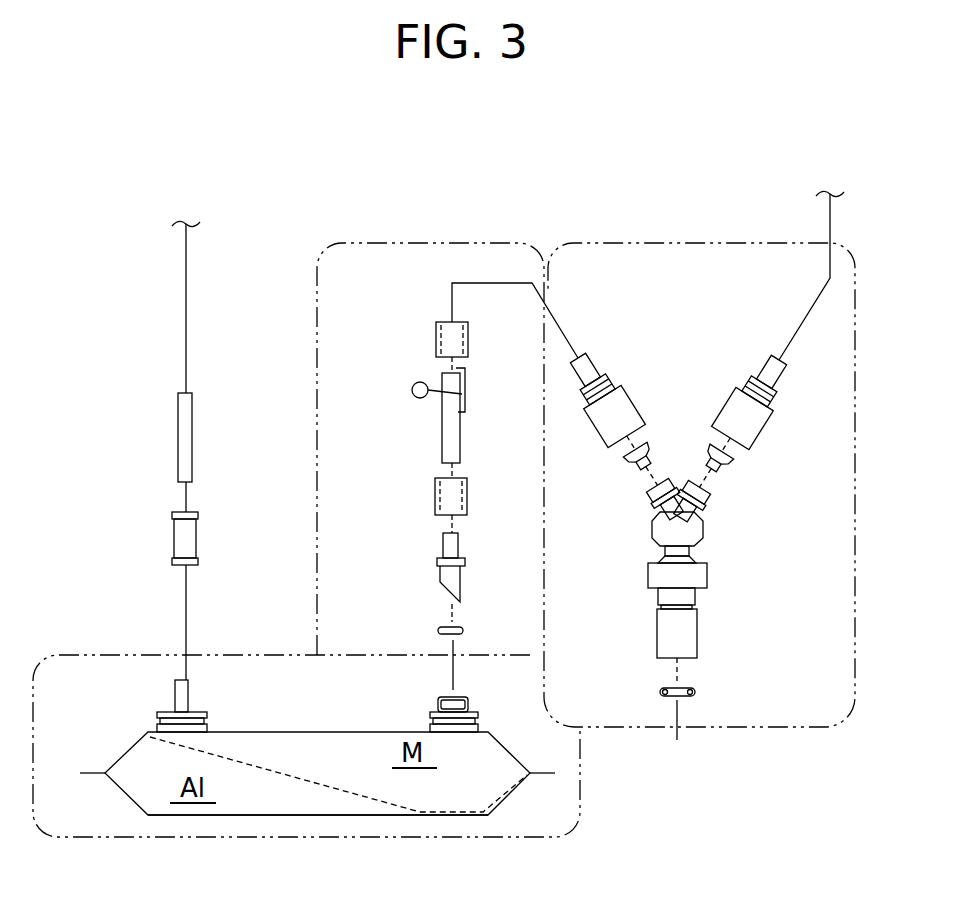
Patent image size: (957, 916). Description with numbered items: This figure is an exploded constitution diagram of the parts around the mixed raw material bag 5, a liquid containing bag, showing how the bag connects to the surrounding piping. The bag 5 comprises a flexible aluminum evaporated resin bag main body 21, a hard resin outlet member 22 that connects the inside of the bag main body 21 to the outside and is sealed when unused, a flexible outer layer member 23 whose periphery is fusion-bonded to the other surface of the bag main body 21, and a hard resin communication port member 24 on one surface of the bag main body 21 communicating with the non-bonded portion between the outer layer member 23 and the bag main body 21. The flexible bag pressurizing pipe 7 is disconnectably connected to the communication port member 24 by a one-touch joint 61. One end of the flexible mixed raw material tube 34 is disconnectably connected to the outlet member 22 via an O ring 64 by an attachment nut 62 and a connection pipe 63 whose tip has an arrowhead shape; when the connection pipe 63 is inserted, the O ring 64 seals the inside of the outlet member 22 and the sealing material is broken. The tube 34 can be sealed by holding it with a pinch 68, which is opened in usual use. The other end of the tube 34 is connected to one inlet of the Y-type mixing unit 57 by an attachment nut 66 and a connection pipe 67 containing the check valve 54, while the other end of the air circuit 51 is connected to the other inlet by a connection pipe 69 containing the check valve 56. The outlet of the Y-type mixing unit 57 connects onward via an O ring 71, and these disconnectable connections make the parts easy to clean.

The mixed raw material bag 5 is at (101, 793).
The bag pressurizing pipe 7 is at (178, 437).
The bag main body 21 is at (510, 757).
The outlet member 22 is at (438, 703).
The outer layer member 23 is at (240, 815).
The communication port member 24 is at (175, 690).
The mixed raw material tube 34 is at (460, 430).
The air circuit 51 is at (802, 326).
The check valve 54 is at (645, 446).
The check valve 56 is at (738, 466).
The Y-type mixing unit 57 is at (707, 577).
The one-touch joint 61 is at (199, 539).
The attachment nut 62 is at (467, 495).
The connection pipe 63 is at (463, 578).
The O ring 64 is at (463, 630).
The attachment nut 66 is at (436, 338).
The connection pipe 67 is at (628, 410).
The pinch 68 is at (412, 390).
The connection pipe 69 is at (736, 406).
The O ring 71 is at (697, 692).